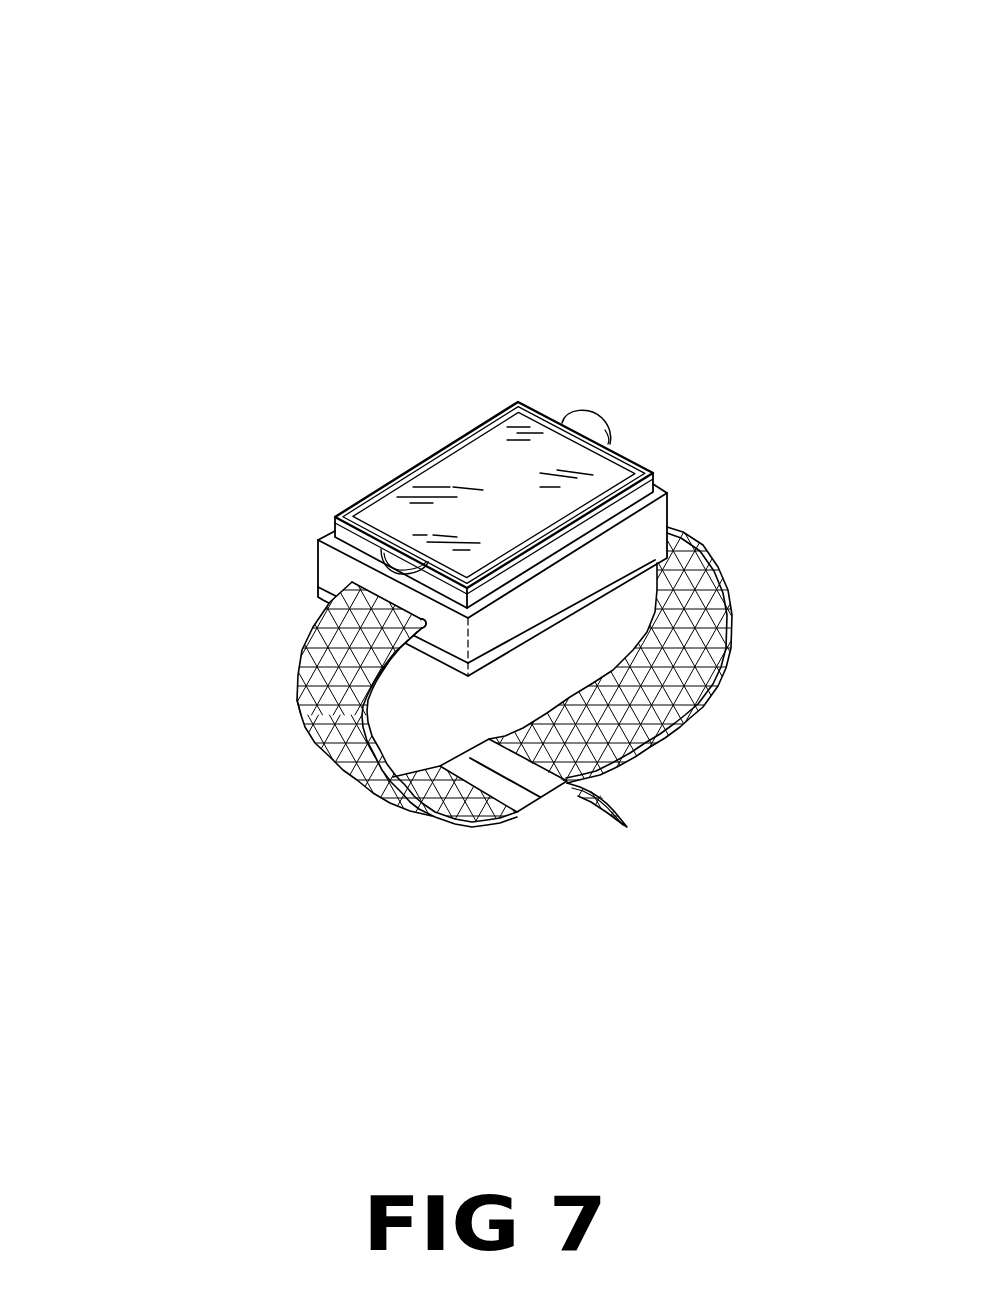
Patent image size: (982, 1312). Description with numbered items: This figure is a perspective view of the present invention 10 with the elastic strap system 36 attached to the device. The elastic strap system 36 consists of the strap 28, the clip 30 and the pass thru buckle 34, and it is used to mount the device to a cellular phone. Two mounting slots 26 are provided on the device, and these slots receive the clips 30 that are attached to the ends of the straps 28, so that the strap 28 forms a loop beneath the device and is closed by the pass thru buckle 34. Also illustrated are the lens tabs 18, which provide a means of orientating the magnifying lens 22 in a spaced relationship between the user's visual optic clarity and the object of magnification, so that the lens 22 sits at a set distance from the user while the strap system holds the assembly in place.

The present invention 10 is at (495, 489).
The lens tabs 18 is at (590, 417).
The magnifying lens 22 is at (497, 495).
The mounting slots 26 is at (425, 630).
The strap 28 is at (718, 585).
The clip 30 is at (352, 581).
The pass thru buckle 34 is at (542, 807).
The elastic strap system 36 is at (240, 638).